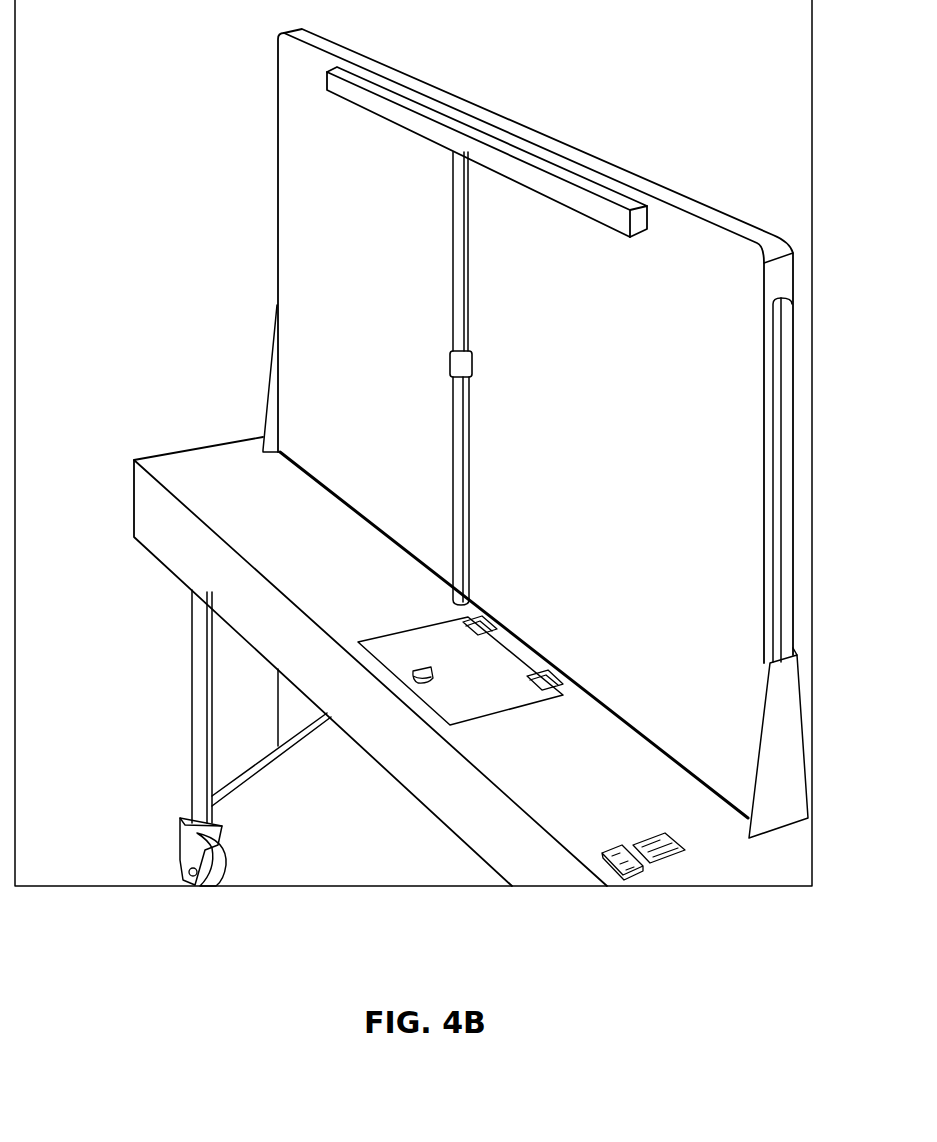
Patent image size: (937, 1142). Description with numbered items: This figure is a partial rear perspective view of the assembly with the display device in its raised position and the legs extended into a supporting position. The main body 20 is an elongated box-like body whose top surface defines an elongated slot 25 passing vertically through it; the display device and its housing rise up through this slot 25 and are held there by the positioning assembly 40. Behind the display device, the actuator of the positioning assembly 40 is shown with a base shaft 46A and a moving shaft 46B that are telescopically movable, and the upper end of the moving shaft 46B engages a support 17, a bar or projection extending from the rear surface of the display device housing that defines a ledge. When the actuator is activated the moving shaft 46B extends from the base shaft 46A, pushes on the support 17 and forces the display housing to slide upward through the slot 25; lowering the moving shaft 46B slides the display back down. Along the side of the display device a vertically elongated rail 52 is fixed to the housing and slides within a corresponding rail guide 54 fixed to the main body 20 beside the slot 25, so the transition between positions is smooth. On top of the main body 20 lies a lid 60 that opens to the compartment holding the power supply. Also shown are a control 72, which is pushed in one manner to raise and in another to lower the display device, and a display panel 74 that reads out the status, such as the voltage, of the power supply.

The support 17 is at (443, 133).
The main body 20 is at (211, 467).
The slot 25 is at (635, 719).
The positioning assembly 40 is at (798, 435).
The base shaft 46A is at (460, 453).
The moving shaft 46B is at (463, 303).
The rail 52 is at (788, 568).
The rail guide 54 is at (786, 730).
The lid 60 is at (485, 680).
The control 72 is at (640, 877).
The display panel 74 is at (690, 860).